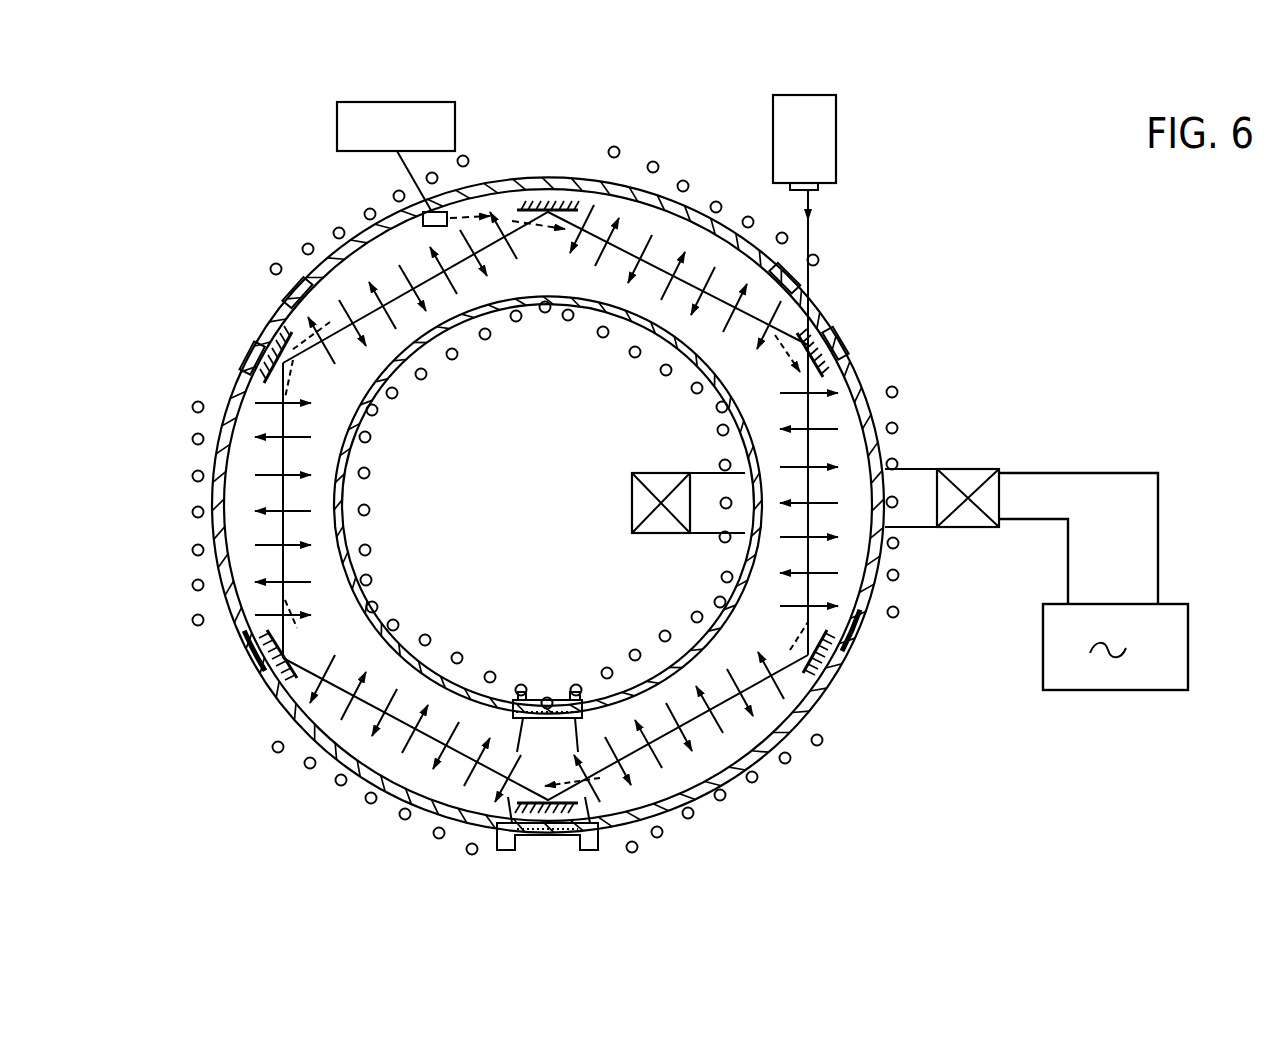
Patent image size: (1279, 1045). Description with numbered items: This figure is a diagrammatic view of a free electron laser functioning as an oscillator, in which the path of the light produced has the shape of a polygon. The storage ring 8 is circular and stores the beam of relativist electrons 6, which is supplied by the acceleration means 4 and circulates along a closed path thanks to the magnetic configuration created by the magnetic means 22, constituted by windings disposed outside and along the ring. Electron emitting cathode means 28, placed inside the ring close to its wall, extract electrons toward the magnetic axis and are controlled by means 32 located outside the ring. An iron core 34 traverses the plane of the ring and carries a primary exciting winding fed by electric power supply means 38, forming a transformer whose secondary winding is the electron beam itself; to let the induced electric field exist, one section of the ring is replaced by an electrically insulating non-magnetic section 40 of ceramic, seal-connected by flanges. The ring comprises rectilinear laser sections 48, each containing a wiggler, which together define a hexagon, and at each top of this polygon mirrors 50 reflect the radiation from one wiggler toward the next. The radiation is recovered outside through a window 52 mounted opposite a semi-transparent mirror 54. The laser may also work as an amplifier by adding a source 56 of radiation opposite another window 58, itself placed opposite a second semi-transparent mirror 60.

The acceleration means 4 is at (1092, 468).
The beam of relativist electrons 6 is at (313, 668).
The storage ring 8 is at (703, 792).
The magnetic means 22 is at (616, 150).
The electron emitting cathode means 28 is at (400, 220).
The control means 32 is at (433, 117).
The iron core 34 is at (972, 478).
The electric power supply means 38 is at (1068, 673).
The electrically insulating non-magnetic section 40 is at (517, 848).
The laser sections 48 is at (398, 270).
The mirrors 50 is at (266, 650).
The window 52 is at (272, 322).
The semi-transparent mirror 54 is at (268, 377).
The source of electromagnetic radiation 56 is at (818, 110).
The window 58 is at (817, 312).
The semi-transparent mirror 60 is at (822, 366).